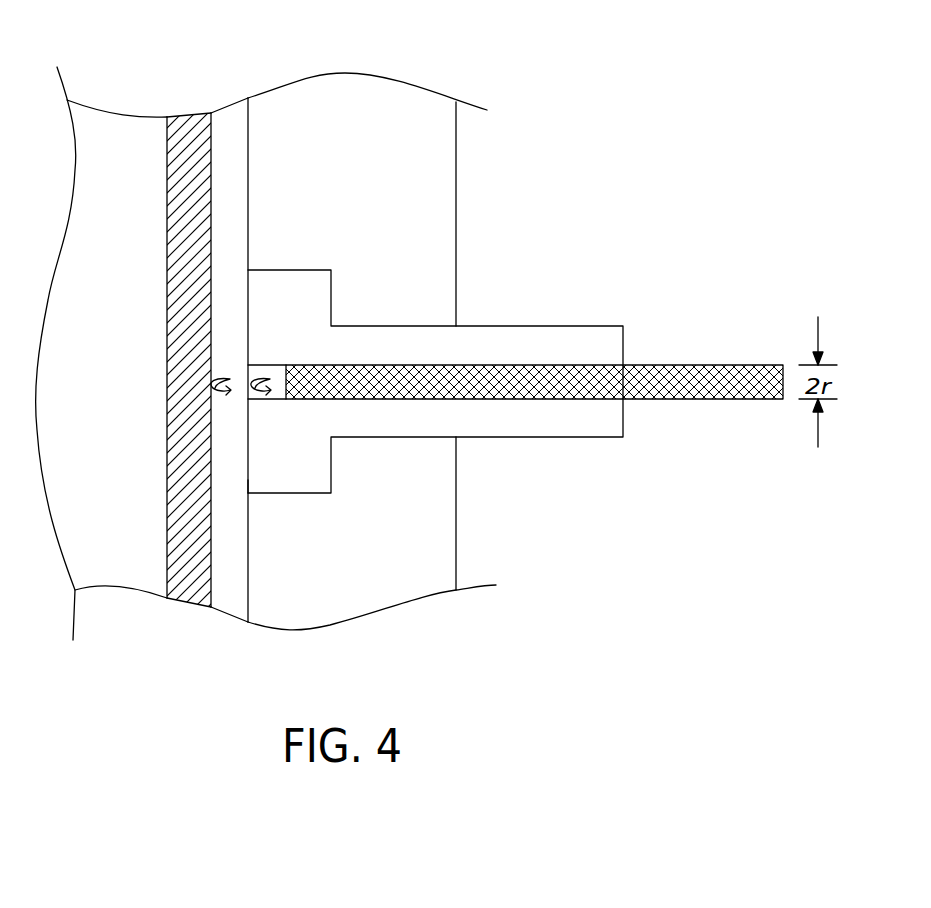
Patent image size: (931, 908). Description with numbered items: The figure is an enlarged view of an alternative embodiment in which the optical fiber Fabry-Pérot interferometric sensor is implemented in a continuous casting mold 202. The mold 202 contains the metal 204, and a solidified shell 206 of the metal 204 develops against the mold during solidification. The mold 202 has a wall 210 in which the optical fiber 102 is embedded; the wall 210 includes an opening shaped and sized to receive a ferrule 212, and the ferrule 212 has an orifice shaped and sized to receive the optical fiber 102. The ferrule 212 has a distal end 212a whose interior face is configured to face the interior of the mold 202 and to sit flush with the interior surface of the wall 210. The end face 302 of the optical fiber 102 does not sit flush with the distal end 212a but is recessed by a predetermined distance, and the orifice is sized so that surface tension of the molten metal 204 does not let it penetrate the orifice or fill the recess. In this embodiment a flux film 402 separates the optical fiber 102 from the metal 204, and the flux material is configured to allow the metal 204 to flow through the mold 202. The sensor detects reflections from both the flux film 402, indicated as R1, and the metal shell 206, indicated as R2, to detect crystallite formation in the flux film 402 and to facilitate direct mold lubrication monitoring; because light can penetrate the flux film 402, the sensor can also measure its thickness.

The optical fiber 102 is at (752, 363).
The mold 202 is at (375, 207).
The metal 204 is at (133, 287).
The solidified shell 206 is at (182, 118).
The wall 210 is at (457, 185).
The ferrule 212 is at (593, 438).
The distal end 212a is at (248, 487).
The end face 302 is at (284, 366).
The flux film 402 is at (232, 120).
The reflection from flux film R1 is at (264, 404).
The reflection from metal shell R2 is at (224, 404).